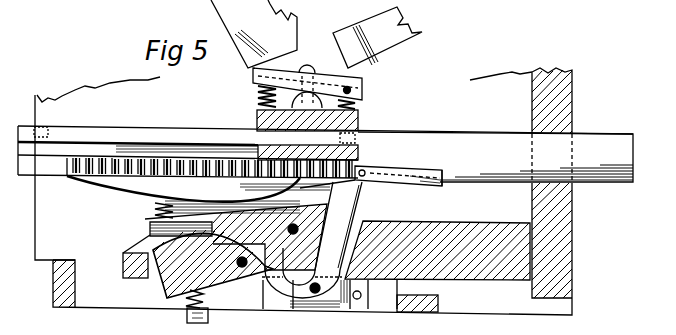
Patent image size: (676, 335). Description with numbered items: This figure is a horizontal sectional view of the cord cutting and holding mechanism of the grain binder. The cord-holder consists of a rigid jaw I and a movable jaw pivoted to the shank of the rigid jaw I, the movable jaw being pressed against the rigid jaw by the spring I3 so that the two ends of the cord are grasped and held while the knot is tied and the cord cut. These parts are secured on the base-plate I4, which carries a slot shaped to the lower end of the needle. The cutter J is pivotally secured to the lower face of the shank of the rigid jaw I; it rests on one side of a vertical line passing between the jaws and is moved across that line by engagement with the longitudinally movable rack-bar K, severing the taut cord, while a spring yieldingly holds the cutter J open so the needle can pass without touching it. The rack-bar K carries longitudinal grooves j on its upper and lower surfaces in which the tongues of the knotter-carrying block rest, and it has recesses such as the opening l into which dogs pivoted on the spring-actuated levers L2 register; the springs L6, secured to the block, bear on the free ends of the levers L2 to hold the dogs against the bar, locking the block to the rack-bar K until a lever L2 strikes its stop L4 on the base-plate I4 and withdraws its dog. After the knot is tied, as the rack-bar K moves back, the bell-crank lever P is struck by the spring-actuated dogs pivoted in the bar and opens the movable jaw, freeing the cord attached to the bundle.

The rack-bar K is at (495, 157).
The longitudinal grooves j is at (104, 151).
The opening l is at (43, 128).
The cutter J is at (236, 231).
The rigid jaw I is at (213, 264).
The base-plate I4 is at (125, 256).
The spring I3 is at (204, 300).
The bell-crank lever P is at (312, 240).
The stops L4 is at (316, 34).
The spring-actuated levers L2 is at (325, 73).
The springs L6 is at (365, 103).